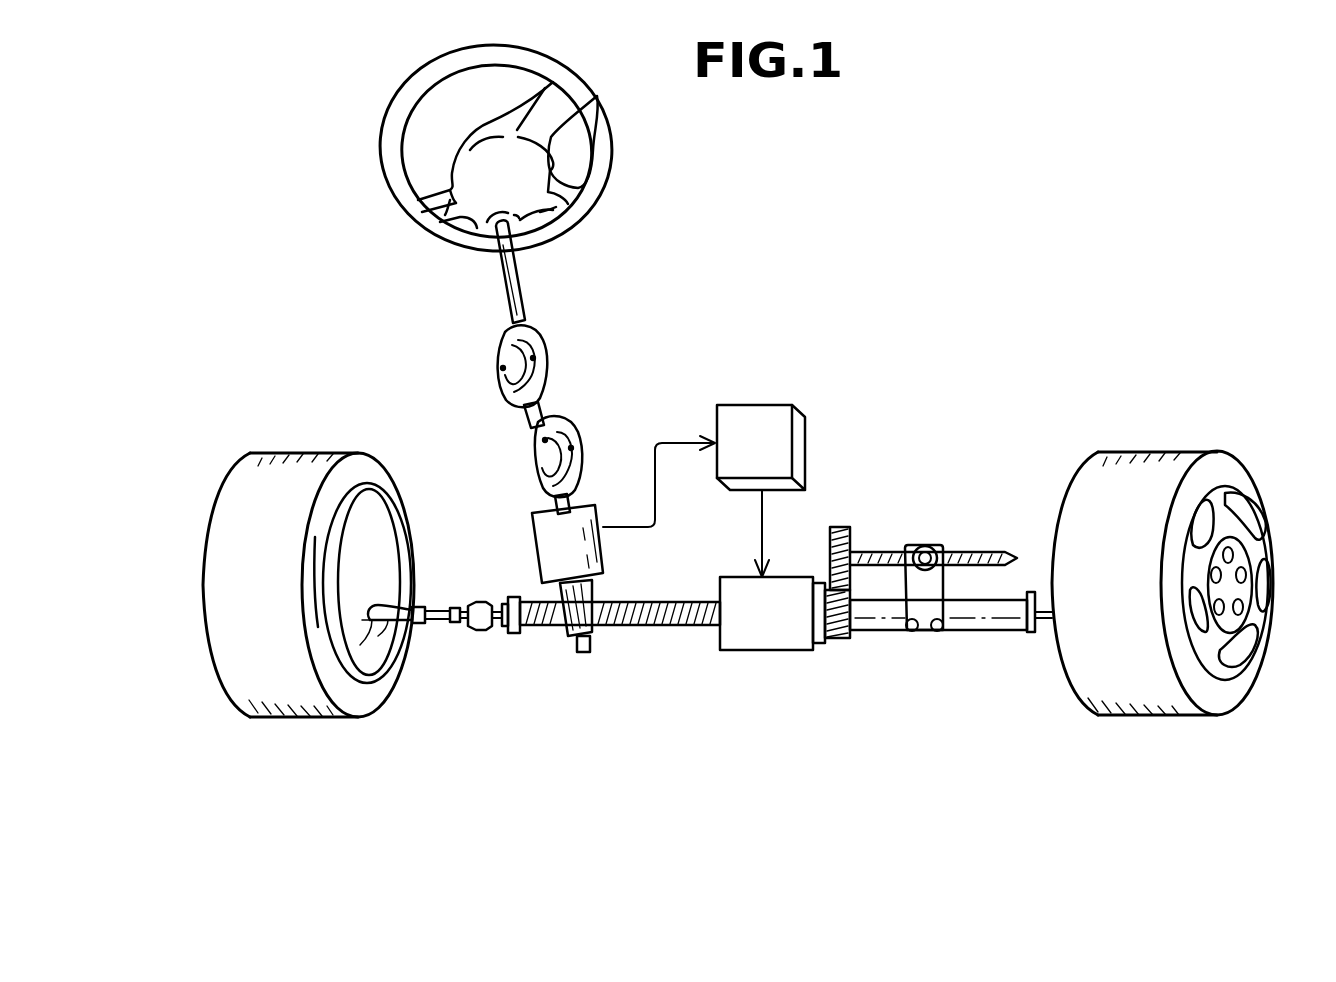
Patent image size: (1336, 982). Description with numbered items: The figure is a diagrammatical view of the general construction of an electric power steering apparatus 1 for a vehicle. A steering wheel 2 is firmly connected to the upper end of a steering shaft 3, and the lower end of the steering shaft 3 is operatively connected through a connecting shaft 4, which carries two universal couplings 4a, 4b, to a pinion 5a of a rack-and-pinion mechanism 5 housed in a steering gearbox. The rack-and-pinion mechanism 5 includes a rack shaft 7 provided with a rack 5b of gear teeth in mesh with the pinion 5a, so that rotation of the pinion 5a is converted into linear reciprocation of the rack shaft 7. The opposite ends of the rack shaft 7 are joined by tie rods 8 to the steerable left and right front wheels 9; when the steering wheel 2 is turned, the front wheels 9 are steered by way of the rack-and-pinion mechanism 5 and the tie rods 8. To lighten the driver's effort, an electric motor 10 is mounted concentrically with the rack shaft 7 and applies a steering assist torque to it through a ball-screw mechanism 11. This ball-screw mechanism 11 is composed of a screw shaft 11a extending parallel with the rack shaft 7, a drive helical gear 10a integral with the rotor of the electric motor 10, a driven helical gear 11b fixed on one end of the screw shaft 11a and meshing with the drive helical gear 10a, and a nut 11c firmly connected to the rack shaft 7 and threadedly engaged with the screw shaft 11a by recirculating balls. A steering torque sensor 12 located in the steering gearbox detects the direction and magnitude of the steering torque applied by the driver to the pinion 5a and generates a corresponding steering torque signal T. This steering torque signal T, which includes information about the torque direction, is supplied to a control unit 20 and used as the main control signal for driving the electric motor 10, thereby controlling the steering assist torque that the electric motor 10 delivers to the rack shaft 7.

The electric power steering apparatus 1 is at (918, 157).
The steering wheel 2 is at (405, 108).
The steering shaft 3 is at (514, 283).
The connecting shaft 4 is at (563, 414).
The universal coupling 4a is at (535, 342).
The universal coupling 4b is at (552, 420).
The rack-and-pinion mechanism 5 is at (620, 683).
The pinion 5a is at (563, 655).
The rack 5b is at (625, 632).
The rack shaft 7 is at (677, 632).
The tie rod 8 is at (440, 632).
The front wheel 9 is at (301, 719).
The electric motor 10 is at (793, 683).
The drive helical gear 10a is at (838, 640).
The ball-screw mechanism 11 is at (930, 510).
The screw shaft 11a is at (978, 553).
The driven helical gear 11b is at (845, 527).
The nut 11c is at (933, 543).
The steering torque sensor 12 is at (538, 540).
The control unit 20 is at (762, 405).
The steering torque signal T is at (659, 481).